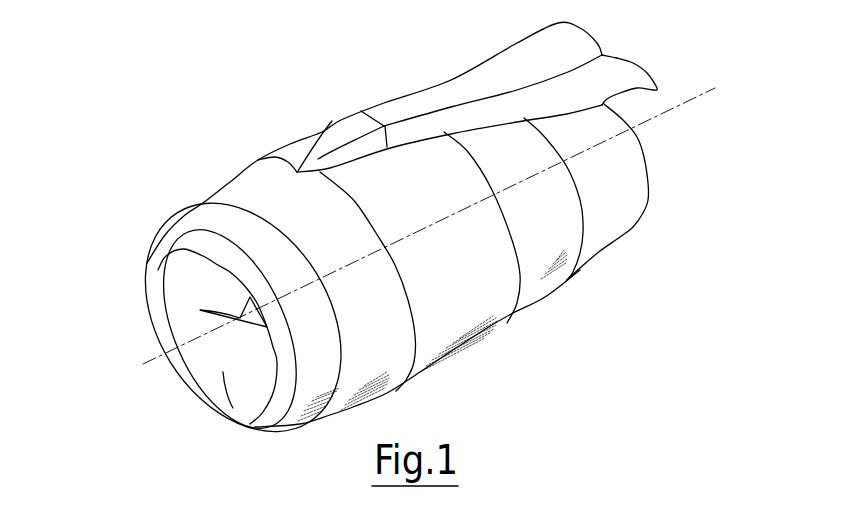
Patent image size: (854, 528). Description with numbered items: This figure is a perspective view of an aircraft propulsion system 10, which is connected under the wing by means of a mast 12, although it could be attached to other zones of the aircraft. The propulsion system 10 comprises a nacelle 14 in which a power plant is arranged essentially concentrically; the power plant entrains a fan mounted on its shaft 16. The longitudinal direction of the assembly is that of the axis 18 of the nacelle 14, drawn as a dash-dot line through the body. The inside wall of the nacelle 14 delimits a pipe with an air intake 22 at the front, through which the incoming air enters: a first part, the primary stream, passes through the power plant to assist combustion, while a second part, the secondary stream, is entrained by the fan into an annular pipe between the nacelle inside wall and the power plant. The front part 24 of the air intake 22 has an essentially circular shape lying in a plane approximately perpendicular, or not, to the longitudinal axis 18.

The propulsion system 10 is at (384, 239).
The mast 12 is at (476, 83).
The nacelle 14 is at (530, 313).
The shaft 16 is at (157, 329).
The longitudinal axis 18 is at (160, 360).
The air intake 22 is at (233, 391).
The front part 24 is at (177, 284).